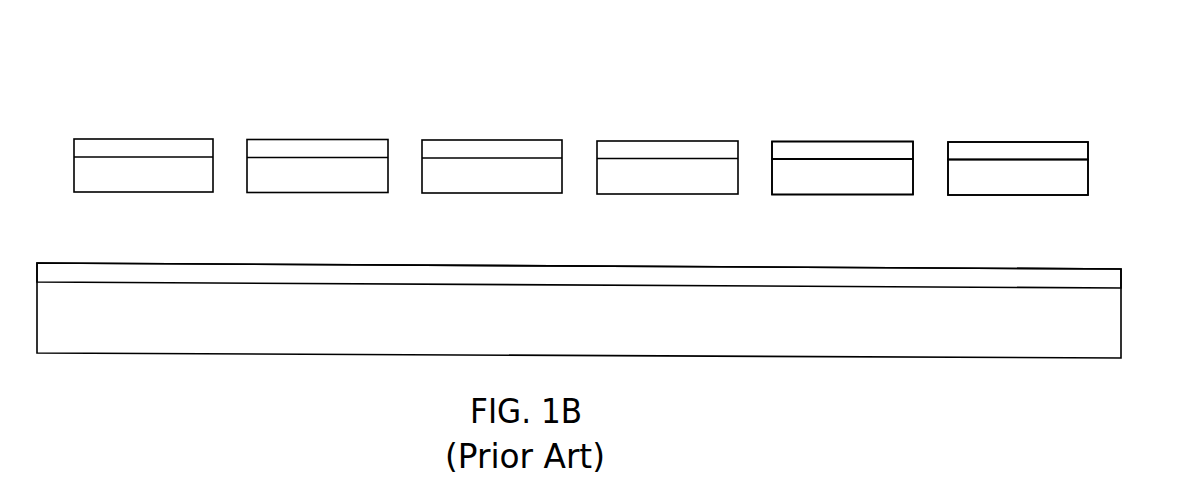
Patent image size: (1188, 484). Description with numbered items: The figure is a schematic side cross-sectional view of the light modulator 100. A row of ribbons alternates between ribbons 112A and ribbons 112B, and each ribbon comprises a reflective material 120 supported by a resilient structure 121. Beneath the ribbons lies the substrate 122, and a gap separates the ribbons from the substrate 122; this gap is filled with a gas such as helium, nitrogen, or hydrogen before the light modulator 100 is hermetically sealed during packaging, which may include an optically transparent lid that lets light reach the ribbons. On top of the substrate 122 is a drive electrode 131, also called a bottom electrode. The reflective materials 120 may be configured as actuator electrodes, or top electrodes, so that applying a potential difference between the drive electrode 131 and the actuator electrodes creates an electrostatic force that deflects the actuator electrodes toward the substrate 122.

The light modulator 100 is at (105, 95).
The ribbon 112A is at (143, 110).
The ribbon 112B is at (324, 116).
The reflective material 120 is at (882, 146).
The resilient structure 121 is at (870, 185).
The substrate 122 is at (535, 326).
The drive electrode 131 is at (1115, 270).